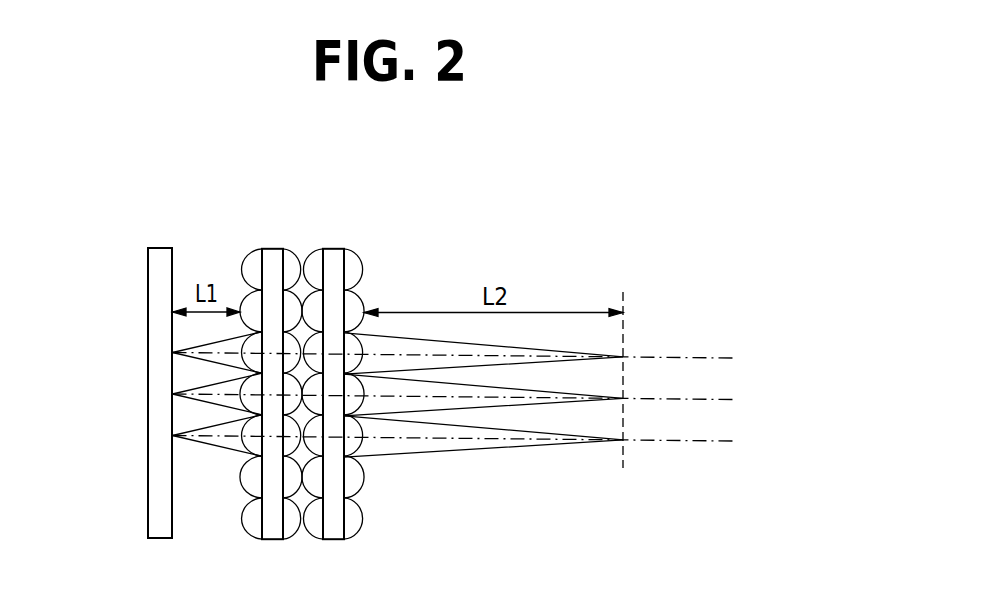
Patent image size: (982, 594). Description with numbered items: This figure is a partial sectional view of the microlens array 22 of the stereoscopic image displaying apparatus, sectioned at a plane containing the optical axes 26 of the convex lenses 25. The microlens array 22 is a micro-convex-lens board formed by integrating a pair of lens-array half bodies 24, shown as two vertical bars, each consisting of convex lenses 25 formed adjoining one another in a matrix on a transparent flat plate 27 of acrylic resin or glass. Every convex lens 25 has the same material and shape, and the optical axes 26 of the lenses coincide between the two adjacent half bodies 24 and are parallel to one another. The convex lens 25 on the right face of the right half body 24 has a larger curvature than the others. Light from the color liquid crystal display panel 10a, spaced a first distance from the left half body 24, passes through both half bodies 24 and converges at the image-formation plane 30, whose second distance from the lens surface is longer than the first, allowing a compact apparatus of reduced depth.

The color liquid crystal display panel 10a is at (165, 248).
The microlens array 22 is at (339, 337).
The lens-array half body 24 is at (339, 356).
The convex lens 25 is at (363, 303).
The optical axis 26 is at (681, 442).
The transparent flat plate 27 is at (337, 258).
The image-formation plane 30 is at (628, 332).